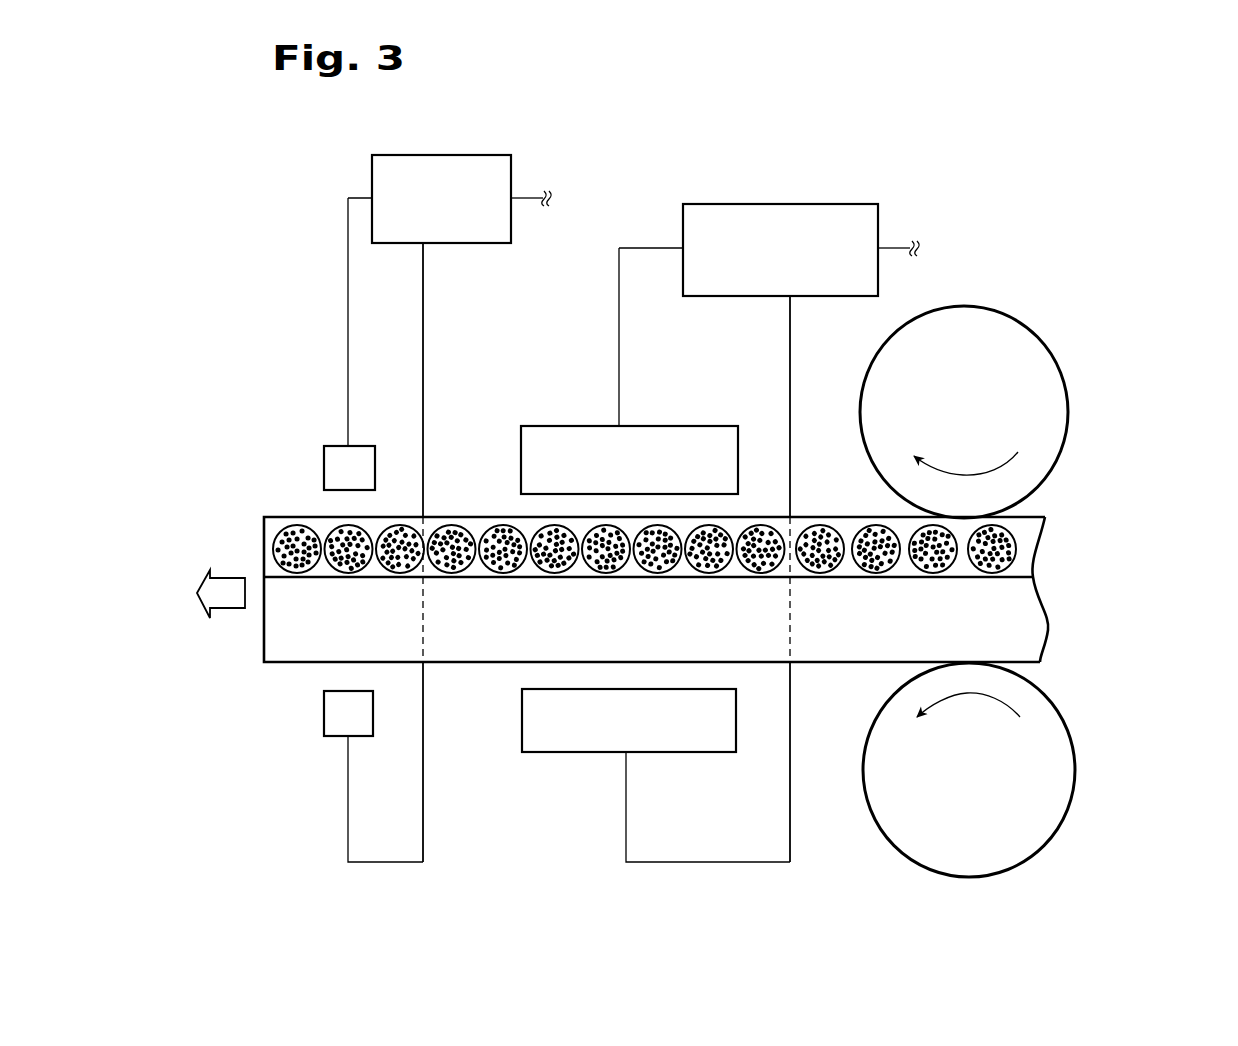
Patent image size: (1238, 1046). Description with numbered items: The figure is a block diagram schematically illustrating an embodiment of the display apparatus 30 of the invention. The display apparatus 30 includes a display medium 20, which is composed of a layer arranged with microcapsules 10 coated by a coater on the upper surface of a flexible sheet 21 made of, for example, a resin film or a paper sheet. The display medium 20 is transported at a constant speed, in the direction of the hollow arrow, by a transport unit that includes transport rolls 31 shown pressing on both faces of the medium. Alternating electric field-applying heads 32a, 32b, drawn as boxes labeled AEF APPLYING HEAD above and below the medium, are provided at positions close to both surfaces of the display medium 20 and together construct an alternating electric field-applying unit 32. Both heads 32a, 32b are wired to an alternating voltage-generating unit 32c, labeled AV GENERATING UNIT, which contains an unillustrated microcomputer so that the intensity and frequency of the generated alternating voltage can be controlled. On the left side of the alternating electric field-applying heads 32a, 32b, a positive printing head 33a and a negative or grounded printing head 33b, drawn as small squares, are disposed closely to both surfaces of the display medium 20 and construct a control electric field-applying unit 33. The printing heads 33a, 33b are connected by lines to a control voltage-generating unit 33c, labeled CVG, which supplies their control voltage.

The microcapsules 10 is at (1015, 548).
The display medium 20 is at (1072, 583).
The flexible sheet 21 is at (1033, 638).
The display apparatus 30 is at (993, 255).
The transport rolls 31 is at (1042, 368).
The alternating electric field-applying unit 32 is at (640, 226).
The alternating electric field-applying head 32a is at (560, 426).
The alternating electric field-applying head 32b is at (570, 755).
The alternating voltage-generating unit 32c is at (790, 204).
The control electric field-applying unit 33 is at (293, 285).
The printing head 33a is at (324, 470).
The printing head 33b is at (324, 718).
The control voltage-generating unit 33c is at (438, 155).